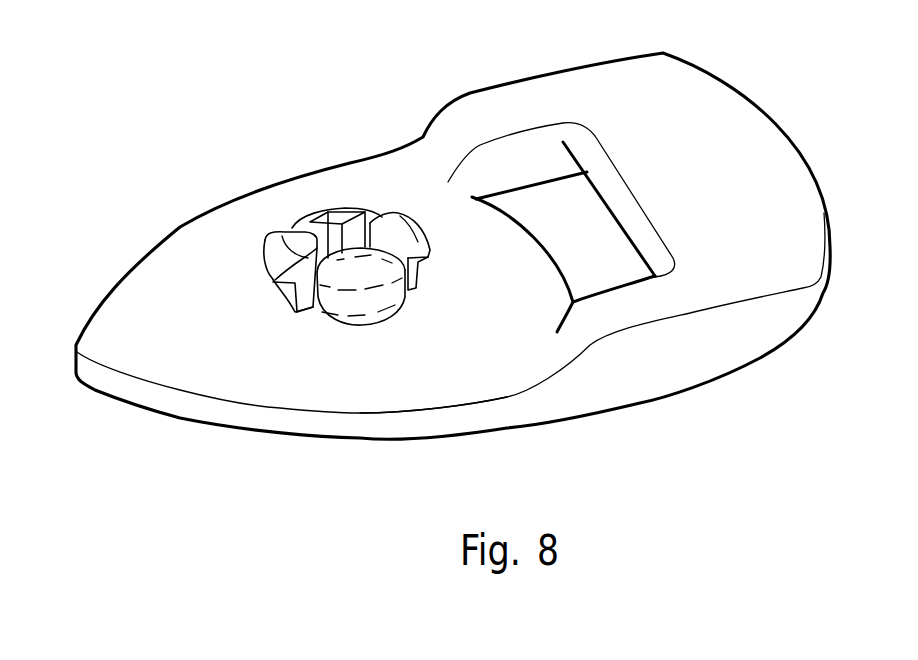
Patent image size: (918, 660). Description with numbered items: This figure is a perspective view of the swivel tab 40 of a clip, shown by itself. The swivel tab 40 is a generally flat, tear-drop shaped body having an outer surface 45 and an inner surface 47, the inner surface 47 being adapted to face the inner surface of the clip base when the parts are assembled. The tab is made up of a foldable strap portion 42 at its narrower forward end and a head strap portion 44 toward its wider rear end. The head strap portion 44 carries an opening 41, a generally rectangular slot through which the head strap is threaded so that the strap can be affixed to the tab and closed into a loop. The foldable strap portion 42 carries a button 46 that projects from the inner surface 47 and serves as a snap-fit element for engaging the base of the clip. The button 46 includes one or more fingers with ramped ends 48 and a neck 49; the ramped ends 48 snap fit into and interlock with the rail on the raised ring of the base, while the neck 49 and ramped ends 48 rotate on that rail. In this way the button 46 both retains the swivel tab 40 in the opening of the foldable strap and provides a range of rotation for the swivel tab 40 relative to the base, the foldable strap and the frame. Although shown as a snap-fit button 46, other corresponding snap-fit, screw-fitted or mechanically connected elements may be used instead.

The swivel tab 40 is at (427, 278).
The opening 41 is at (543, 207).
The foldable strap portion 42 is at (115, 325).
The head strap portion 44 is at (672, 60).
The outer surface 45 is at (182, 445).
The button 46 is at (528, 184).
The inner surface 47 is at (347, 390).
The ramped ends 48 is at (330, 221).
The neck 49 is at (290, 293).